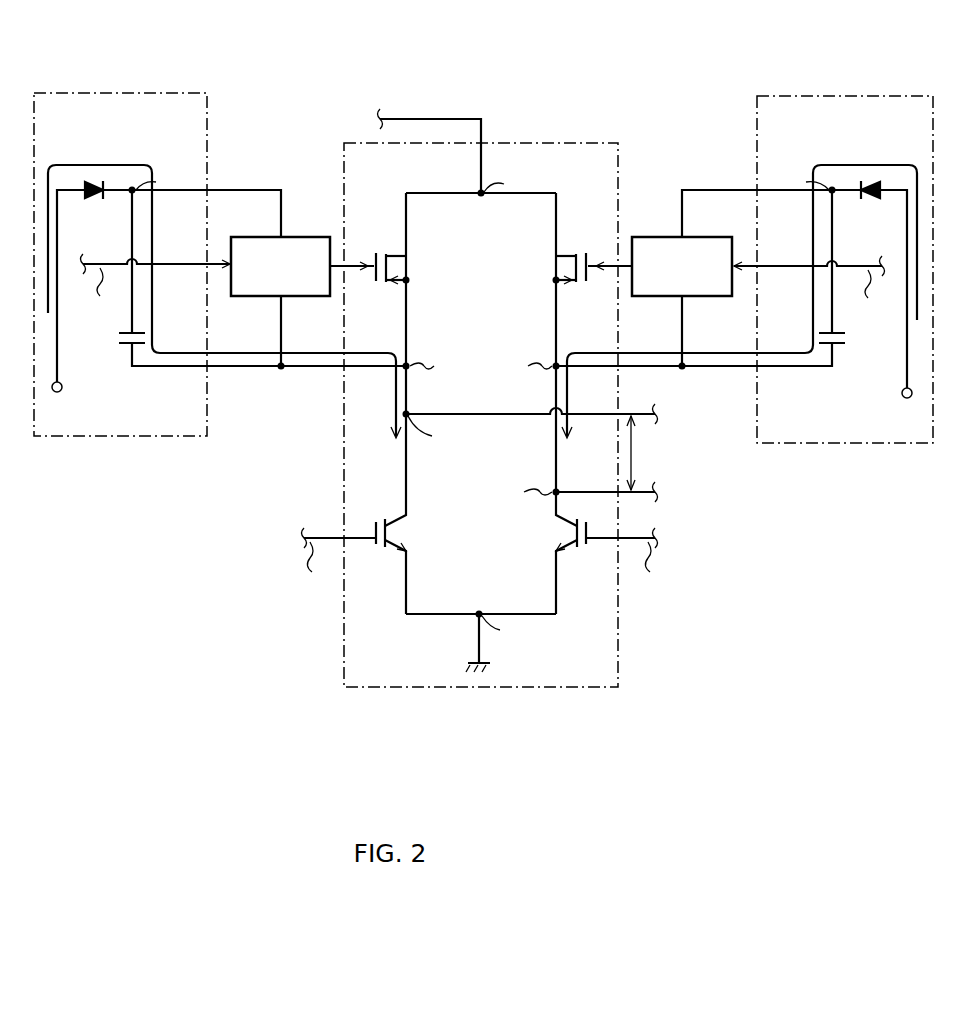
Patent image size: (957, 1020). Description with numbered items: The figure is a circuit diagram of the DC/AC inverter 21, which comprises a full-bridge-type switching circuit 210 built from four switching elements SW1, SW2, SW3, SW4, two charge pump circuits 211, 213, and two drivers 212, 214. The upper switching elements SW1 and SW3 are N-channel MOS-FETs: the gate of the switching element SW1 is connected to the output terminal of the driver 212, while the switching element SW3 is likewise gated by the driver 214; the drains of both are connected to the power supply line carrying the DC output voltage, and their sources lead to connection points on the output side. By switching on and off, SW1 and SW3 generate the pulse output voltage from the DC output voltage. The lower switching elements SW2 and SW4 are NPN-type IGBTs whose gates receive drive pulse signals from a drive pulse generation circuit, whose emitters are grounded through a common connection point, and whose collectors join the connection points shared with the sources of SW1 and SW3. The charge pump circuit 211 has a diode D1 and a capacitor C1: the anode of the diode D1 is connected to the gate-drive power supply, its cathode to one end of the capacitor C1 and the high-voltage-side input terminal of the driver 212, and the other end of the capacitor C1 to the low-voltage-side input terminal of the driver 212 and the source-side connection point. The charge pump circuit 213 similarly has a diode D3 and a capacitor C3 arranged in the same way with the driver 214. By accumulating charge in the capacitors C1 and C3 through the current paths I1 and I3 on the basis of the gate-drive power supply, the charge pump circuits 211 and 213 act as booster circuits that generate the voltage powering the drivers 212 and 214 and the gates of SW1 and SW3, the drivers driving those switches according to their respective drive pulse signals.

The DC/AC inverter 21 is at (618, 93).
The full-bridge-type switching circuit 210 is at (478, 690).
The charge pump circuit 211 is at (103, 438).
The driver 212 is at (306, 237).
The charge pump circuit 213 is at (855, 445).
The driver 214 is at (658, 237).
The switching element SW1 is at (417, 268).
The switching element SW2 is at (417, 534).
The switching element SW3 is at (547, 268).
The switching element SW4 is at (547, 534).
The diode D1 is at (105, 198).
The diode D3 is at (862, 198).
The capacitor C1 is at (140, 335).
The capacitor C3 is at (826, 334).
The current path I1 is at (98, 165).
The current path I3 is at (864, 165).